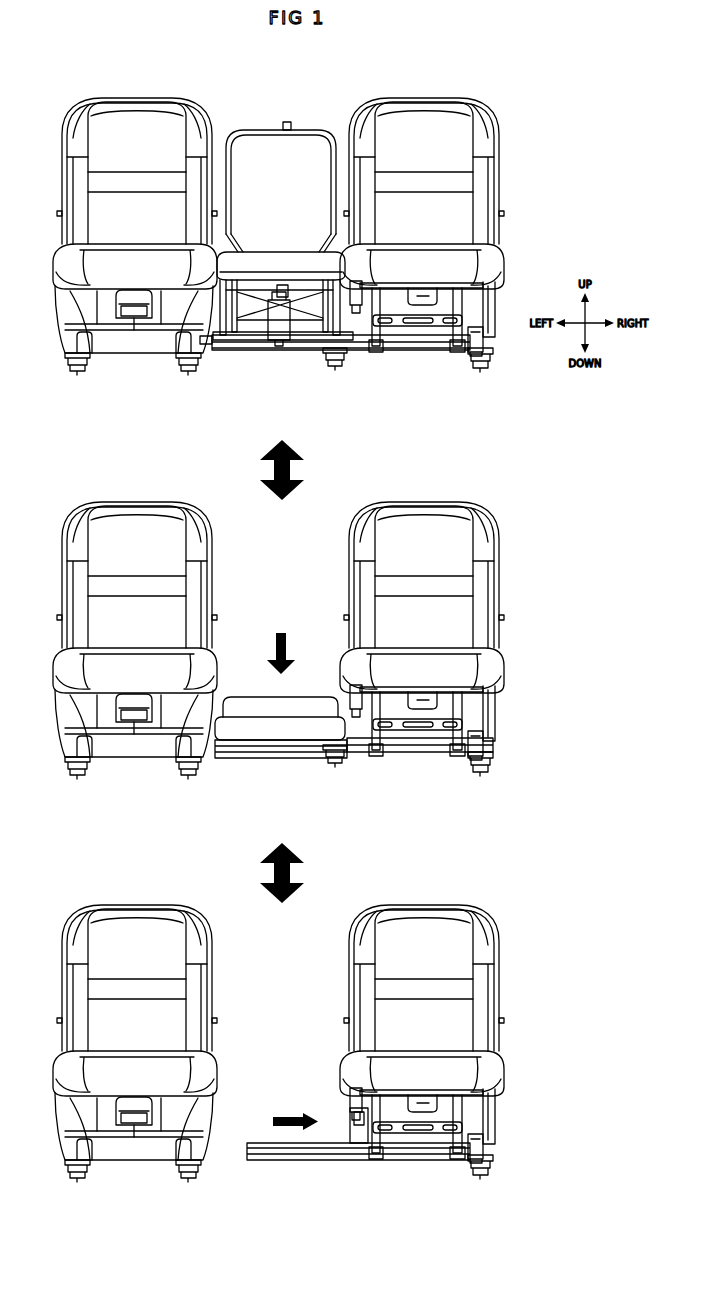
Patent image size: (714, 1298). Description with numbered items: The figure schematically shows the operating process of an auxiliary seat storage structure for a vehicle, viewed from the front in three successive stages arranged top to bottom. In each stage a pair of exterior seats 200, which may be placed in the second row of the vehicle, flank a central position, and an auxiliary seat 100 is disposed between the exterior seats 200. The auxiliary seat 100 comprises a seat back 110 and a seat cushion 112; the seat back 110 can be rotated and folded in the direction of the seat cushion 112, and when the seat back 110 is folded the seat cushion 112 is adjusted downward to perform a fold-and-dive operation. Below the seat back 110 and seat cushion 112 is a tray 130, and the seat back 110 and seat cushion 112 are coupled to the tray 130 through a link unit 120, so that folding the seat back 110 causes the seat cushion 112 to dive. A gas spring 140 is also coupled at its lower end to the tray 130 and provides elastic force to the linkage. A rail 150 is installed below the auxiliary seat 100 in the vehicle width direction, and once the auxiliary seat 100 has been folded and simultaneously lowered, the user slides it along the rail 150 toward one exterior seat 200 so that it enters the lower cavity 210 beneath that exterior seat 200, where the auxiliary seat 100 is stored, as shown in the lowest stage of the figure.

The auxiliary seat 100 is at (284, 607).
The seat back 110 is at (262, 140).
The seat cushion 112 is at (245, 265).
The link unit 120 is at (312, 316).
The tray 130 is at (258, 340).
The gas spring 140 is at (300, 318).
The rail 150 is at (363, 351).
The exterior seat 200 is at (197, 102).
The lower cavity 210 is at (413, 330).